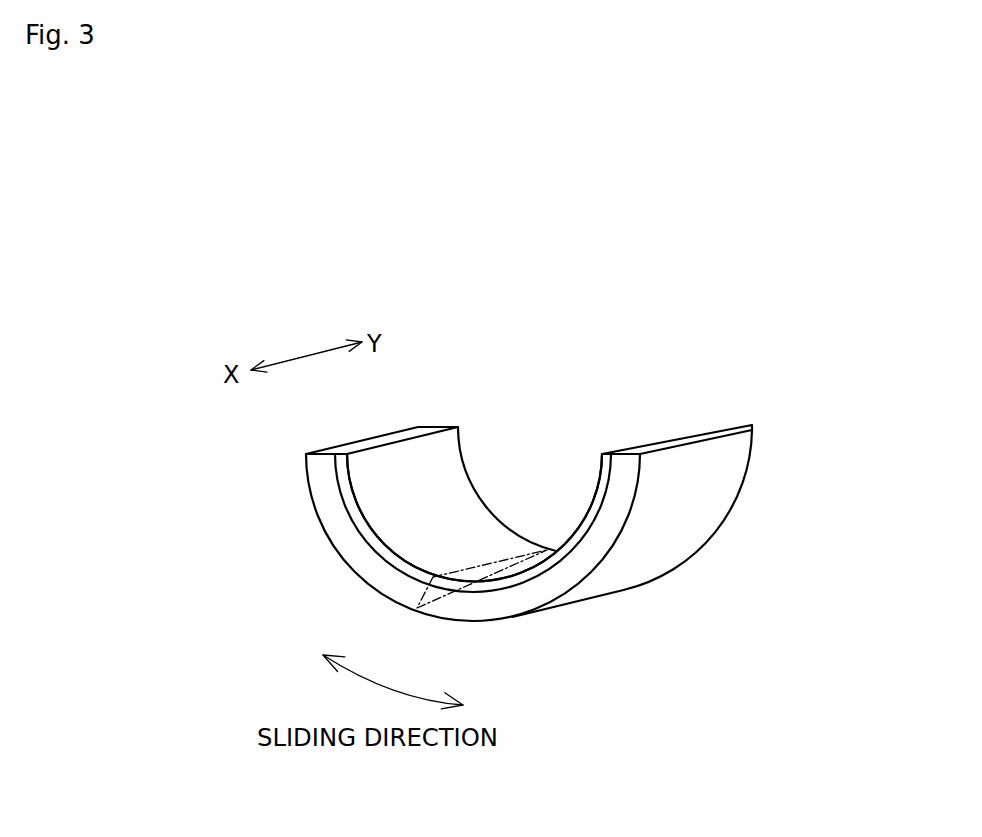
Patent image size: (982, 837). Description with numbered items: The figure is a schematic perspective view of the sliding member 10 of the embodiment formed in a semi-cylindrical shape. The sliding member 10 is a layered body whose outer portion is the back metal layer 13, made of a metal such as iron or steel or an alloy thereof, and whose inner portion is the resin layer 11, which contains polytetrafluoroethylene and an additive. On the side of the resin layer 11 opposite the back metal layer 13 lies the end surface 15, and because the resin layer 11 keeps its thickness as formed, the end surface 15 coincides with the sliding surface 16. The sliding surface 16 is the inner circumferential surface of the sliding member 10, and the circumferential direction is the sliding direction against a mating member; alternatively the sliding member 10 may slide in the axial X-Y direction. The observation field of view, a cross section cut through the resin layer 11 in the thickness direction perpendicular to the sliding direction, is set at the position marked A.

The sliding member 10 is at (515, 448).
The resin layer 11 is at (333, 467).
The back metal layer 13 is at (333, 532).
The end surface 15 is at (445, 443).
The sliding surface 16 is at (445, 443).
The observation field of view position A is at (430, 578).